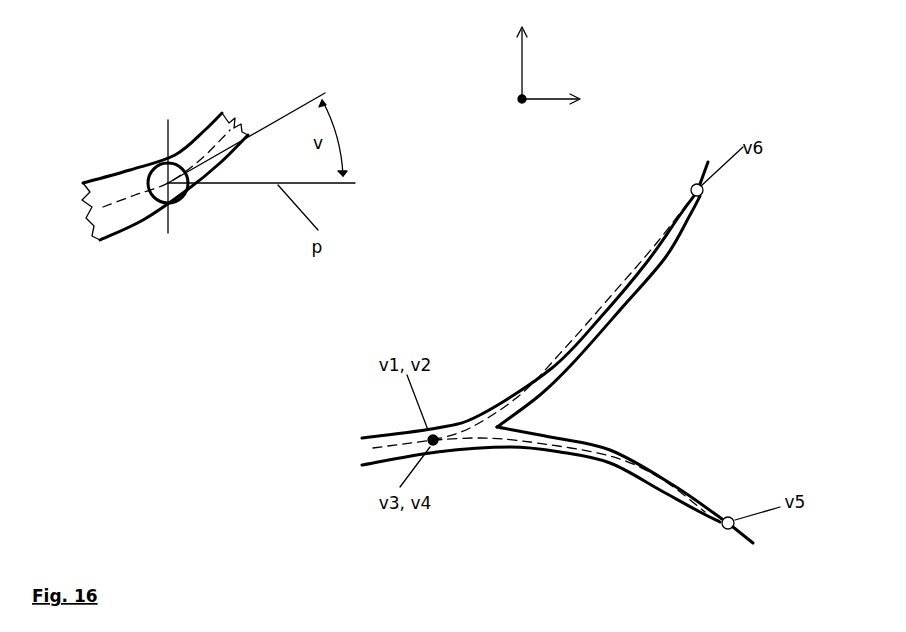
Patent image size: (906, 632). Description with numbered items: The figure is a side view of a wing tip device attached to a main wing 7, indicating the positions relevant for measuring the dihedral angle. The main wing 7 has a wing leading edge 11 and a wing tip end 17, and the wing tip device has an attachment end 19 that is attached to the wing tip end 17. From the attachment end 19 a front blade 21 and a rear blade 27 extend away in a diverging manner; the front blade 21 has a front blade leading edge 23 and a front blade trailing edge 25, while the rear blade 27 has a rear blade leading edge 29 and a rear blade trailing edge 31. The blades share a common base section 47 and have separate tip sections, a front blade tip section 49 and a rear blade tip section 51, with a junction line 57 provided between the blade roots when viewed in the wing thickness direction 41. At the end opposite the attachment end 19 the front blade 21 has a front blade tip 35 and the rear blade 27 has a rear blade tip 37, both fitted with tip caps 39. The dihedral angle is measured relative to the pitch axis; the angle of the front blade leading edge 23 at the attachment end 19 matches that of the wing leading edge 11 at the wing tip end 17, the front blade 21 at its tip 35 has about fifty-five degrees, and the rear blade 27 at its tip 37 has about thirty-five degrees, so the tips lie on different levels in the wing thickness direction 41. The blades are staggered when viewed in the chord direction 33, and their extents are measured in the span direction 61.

The main wing 7 is at (378, 453).
The wing leading edge 11 is at (398, 442).
The wing tip end 17 is at (400, 458).
The attachment end 19 is at (442, 435).
The front blade 21 is at (640, 463).
The front blade leading edge 23 is at (610, 463).
The front blade trailing edge 25 is at (610, 448).
The rear blade 27 is at (608, 338).
The rear blade leading edge 29 is at (573, 363).
The rear blade trailing edge 31 is at (552, 368).
The chord direction 33 is at (510, 111).
The front blade tip 35 is at (713, 515).
The rear blade tip 37 is at (693, 208).
The tip caps 39 is at (703, 173).
The wing thickness direction 41 is at (510, 54).
The base section 47 is at (467, 433).
The front blade tip section 49 is at (673, 482).
The rear blade tip section 51 is at (648, 290).
The junction line 57 is at (517, 418).
The span direction 61 is at (568, 105).